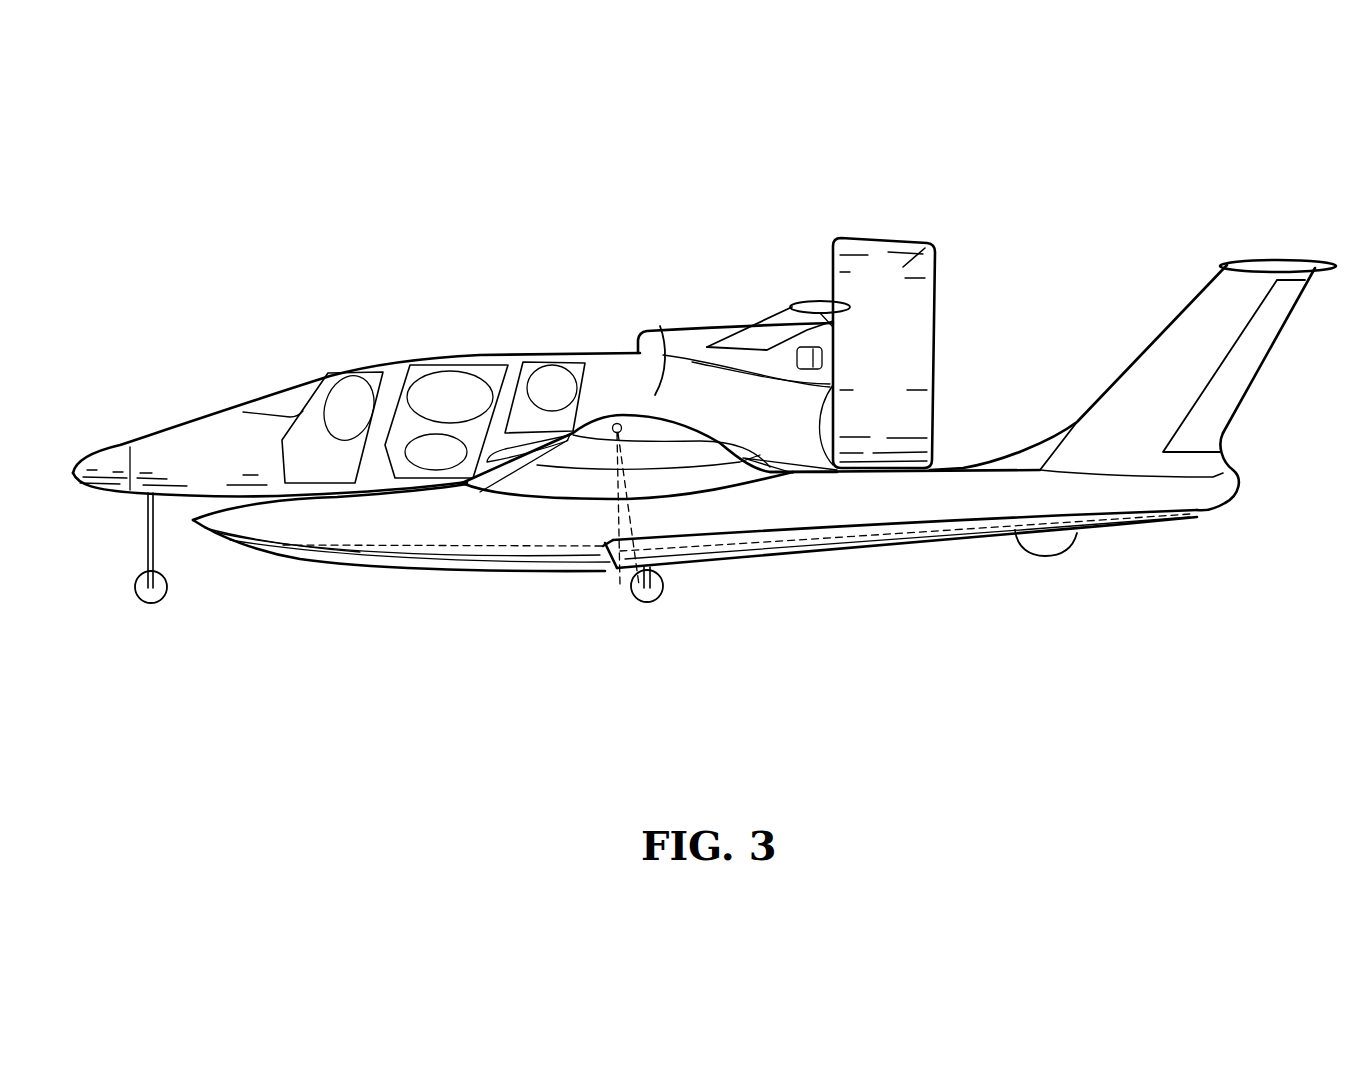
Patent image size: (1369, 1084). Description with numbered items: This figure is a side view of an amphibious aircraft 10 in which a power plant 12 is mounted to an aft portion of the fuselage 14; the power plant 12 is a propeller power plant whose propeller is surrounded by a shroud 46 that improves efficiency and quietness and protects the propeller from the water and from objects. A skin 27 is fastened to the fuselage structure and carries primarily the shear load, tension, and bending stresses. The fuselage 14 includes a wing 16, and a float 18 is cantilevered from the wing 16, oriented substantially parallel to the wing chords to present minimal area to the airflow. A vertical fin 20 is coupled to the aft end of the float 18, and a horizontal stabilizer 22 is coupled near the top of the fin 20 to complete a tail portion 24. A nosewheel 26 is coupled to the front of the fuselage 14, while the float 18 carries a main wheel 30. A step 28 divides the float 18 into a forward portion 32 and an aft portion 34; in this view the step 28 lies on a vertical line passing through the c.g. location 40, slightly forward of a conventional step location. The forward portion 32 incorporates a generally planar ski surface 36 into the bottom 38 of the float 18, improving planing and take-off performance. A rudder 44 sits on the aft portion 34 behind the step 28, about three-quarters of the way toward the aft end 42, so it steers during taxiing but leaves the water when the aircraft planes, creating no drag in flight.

The amphibious aircraft 10 is at (290, 314).
The power plant 12 is at (920, 315).
The fuselage 14 is at (618, 390).
The wing 16 is at (605, 457).
The float 18 is at (343, 523).
The vertical fin 20 is at (1200, 378).
The horizontal stabilizer 22 is at (1278, 264).
The tail portion 24 is at (1177, 358).
The nosewheel 26 is at (135, 583).
The skin 27 is at (660, 326).
The step 28 is at (617, 568).
The main wheel 30 is at (658, 600).
The forward portion 32 is at (438, 568).
The aft portion 34 is at (873, 543).
The ski surface 36 is at (290, 565).
The bottom 38 is at (370, 567).
The c.g. location 40 is at (614, 423).
The aft end 42 is at (1197, 518).
The rudder 44 is at (1050, 557).
The shroud 46 is at (927, 248).